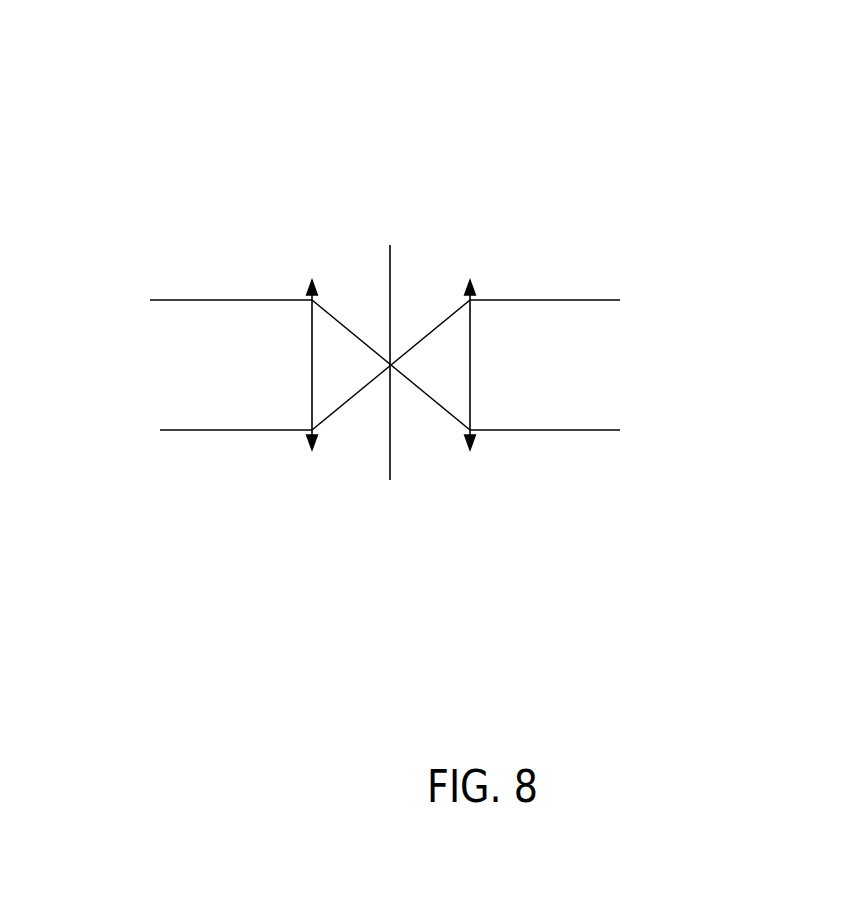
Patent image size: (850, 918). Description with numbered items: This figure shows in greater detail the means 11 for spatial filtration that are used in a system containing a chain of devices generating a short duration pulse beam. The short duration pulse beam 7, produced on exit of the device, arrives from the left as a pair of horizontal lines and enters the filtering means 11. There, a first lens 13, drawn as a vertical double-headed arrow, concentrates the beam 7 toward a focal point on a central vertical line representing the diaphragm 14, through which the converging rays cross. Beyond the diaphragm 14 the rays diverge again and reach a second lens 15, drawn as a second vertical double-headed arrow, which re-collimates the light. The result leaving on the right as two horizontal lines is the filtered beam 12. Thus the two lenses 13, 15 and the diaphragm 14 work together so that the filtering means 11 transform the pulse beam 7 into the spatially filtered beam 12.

The short duration pulse beam 7 is at (257, 298).
The means for spatial filtration 11 is at (652, 180).
The filtered beam 12 is at (577, 298).
The first lens 13 is at (308, 400).
The diaphragm 14 is at (393, 290).
The second lens 15 is at (472, 390).